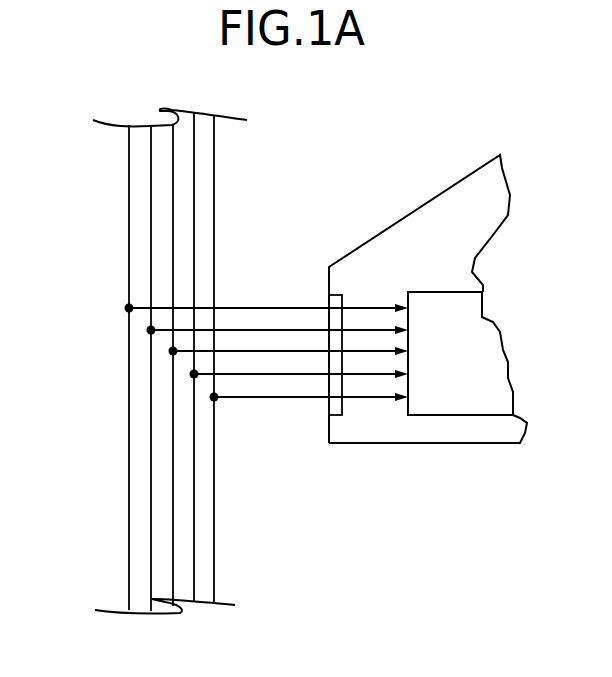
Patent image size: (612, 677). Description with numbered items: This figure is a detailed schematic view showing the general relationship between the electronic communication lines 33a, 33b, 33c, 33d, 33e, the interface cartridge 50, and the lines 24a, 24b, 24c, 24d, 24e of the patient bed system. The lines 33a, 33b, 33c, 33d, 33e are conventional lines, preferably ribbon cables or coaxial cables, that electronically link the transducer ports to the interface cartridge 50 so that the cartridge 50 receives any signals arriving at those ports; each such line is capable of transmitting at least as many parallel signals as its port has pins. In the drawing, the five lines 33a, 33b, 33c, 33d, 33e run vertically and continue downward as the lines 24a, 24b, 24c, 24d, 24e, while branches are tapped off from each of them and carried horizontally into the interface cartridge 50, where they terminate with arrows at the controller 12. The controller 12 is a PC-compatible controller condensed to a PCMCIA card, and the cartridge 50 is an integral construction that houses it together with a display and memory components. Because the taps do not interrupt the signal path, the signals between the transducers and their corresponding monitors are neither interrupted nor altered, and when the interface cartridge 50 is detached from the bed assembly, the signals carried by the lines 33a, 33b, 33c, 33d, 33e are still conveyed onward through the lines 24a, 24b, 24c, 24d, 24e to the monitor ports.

The electronic communication line 33a is at (129, 160).
The electronic communication line 33b is at (151, 200).
The electronic communication line 33c is at (173, 240).
The electronic communication line 33d is at (194, 189).
The electronic communication line 33e is at (214, 243).
The line 24a is at (129, 394).
The line 24b is at (151, 440).
The line 24c is at (173, 494).
The line 24d is at (194, 478).
The line 24e is at (214, 531).
The controller 12 is at (438, 368).
The interface cartridge 50 is at (468, 172).